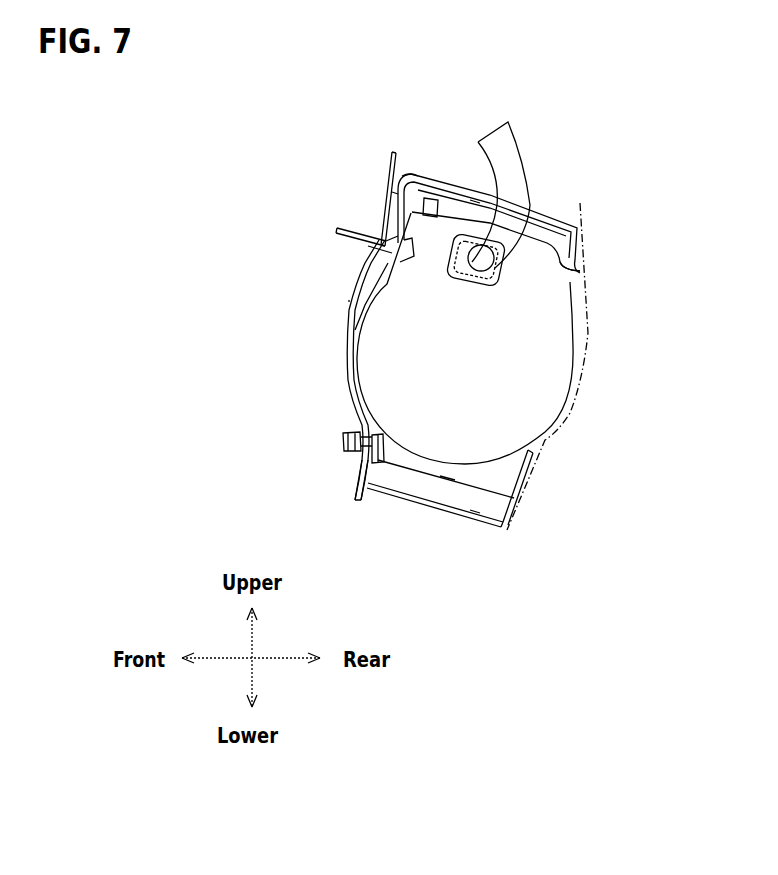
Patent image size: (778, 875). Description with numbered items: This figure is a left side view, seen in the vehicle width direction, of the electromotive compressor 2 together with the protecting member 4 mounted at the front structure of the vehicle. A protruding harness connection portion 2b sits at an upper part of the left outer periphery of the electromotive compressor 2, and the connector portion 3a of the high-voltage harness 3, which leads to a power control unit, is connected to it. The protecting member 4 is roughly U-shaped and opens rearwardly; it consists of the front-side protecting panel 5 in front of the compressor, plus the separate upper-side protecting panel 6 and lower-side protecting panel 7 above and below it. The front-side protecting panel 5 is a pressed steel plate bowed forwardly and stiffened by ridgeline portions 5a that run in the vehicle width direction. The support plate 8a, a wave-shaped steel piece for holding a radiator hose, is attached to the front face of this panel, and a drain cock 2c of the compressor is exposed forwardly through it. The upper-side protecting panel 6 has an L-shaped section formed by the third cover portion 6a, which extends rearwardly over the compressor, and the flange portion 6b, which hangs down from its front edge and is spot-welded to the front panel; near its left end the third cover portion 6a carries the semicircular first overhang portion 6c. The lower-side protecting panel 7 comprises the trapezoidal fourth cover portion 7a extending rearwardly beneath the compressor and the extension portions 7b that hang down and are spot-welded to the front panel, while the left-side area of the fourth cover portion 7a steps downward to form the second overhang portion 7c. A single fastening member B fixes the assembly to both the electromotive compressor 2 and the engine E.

The electromotive compressor 2 is at (580, 319).
The harness connection portion 2b is at (462, 278).
The drain cock 2c is at (335, 232).
The high-voltage harness 3 is at (521, 142).
The connector portion 3a is at (567, 274).
The protecting member 4 is at (305, 308).
The front-side protecting panel 5 is at (348, 386).
The ridgeline portions 5a is at (367, 247).
The upper-side protecting panel 6 is at (443, 175).
The third cover portion 6a is at (478, 206).
The flange portion 6b is at (382, 193).
The first overhang portion 6c is at (414, 172).
The lower-side protecting panel 7 is at (422, 501).
The fourth cover portion 7a is at (448, 497).
The extension portions 7b is at (357, 489).
The second overhang portion 7c is at (480, 518).
The support plate 8a is at (391, 158).
The fastening member B is at (341, 439).
The engine E is at (580, 203).